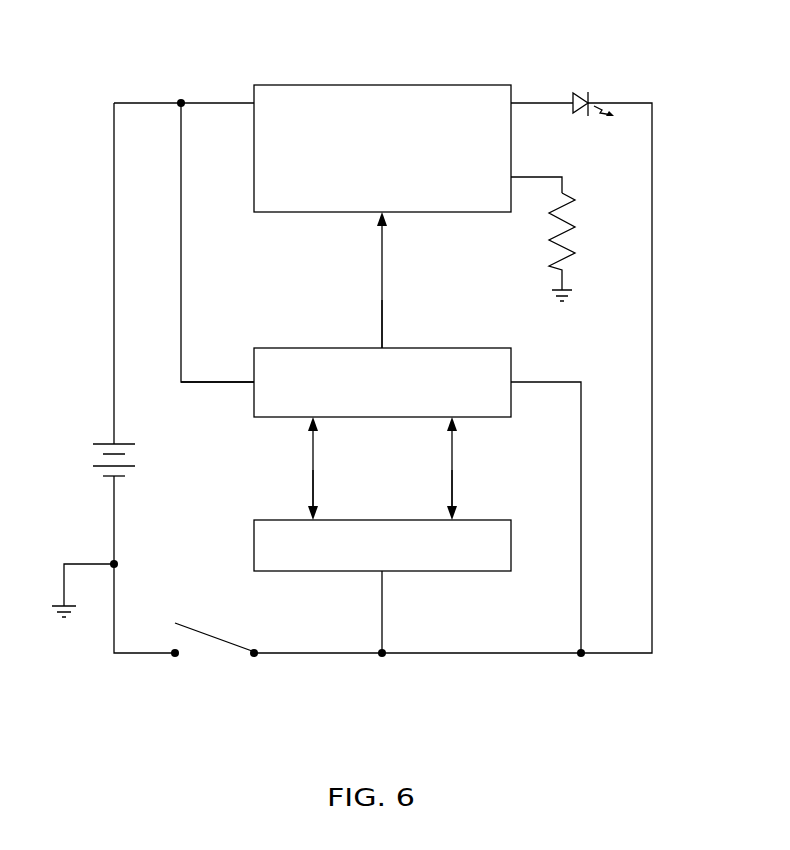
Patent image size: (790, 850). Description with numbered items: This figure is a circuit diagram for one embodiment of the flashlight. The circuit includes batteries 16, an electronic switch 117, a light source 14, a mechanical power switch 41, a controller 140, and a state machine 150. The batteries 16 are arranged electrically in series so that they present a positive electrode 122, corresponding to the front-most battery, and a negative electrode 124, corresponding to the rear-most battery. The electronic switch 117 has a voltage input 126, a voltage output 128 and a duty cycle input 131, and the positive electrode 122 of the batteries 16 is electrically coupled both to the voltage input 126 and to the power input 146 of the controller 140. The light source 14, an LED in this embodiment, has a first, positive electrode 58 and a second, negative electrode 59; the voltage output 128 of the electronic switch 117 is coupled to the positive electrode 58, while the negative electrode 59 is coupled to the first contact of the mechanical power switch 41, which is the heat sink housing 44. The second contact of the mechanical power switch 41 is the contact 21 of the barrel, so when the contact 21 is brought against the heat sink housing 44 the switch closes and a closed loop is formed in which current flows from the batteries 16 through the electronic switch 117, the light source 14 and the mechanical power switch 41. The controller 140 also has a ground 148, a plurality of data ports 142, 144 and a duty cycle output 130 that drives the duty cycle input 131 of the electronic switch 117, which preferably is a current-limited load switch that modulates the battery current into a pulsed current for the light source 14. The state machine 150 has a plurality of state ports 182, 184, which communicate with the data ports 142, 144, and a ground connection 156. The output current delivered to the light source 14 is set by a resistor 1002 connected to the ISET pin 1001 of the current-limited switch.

The light source 14 is at (609, 73).
The batteries 16 is at (115, 453).
The contact 21 is at (176, 656).
The mechanical power switch 41 is at (241, 640).
The heat sink housing 44 is at (257, 656).
The first, positive electrode 58 is at (573, 94).
The second, negative electrode 59 is at (590, 101).
The electronic switch 117 is at (327, 80).
The positive electrode 122 is at (113, 443).
The negative electrode 124 is at (113, 478).
The voltage input 126 is at (254, 103).
The voltage output 128 is at (511, 103).
The duty cycle output 130 is at (384, 346).
The duty cycle input 131 is at (378, 218).
The controller 140 is at (520, 356).
The data port 142 is at (311, 424).
The data port 144 is at (454, 424).
The power input 146 is at (254, 382).
The ground 148 is at (513, 384).
The state machine 150 is at (460, 580).
The ground connection 156 is at (380, 573).
The state port 182 is at (311, 514).
The state port 184 is at (454, 514).
The ISET pin 1001 is at (511, 177).
The resistor 1002 is at (578, 220).